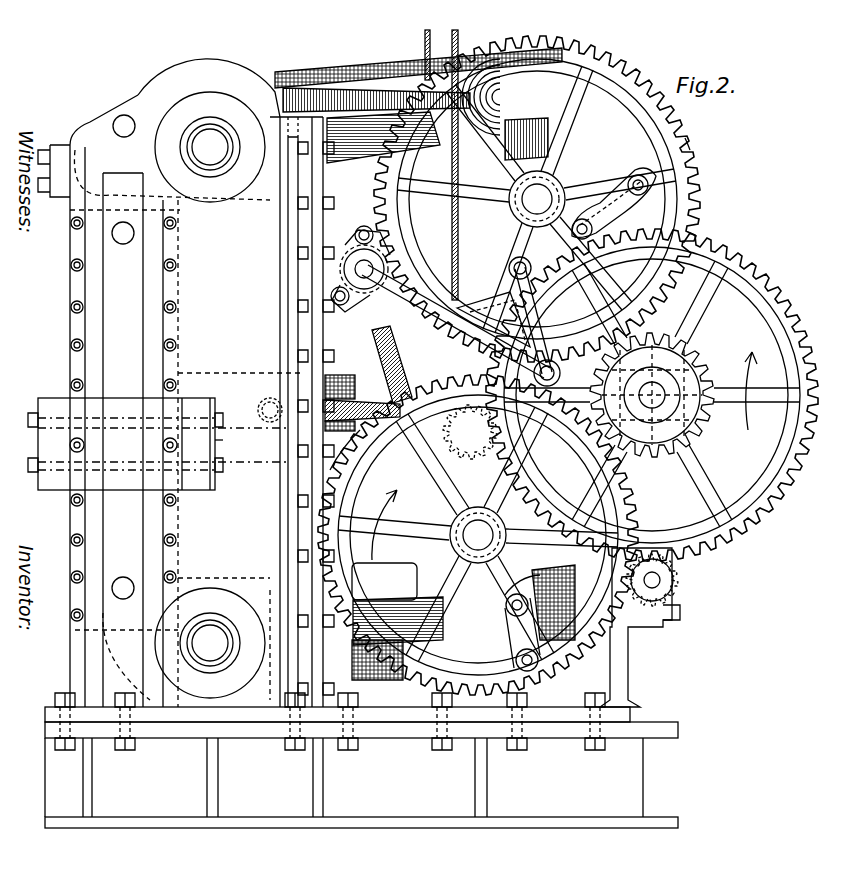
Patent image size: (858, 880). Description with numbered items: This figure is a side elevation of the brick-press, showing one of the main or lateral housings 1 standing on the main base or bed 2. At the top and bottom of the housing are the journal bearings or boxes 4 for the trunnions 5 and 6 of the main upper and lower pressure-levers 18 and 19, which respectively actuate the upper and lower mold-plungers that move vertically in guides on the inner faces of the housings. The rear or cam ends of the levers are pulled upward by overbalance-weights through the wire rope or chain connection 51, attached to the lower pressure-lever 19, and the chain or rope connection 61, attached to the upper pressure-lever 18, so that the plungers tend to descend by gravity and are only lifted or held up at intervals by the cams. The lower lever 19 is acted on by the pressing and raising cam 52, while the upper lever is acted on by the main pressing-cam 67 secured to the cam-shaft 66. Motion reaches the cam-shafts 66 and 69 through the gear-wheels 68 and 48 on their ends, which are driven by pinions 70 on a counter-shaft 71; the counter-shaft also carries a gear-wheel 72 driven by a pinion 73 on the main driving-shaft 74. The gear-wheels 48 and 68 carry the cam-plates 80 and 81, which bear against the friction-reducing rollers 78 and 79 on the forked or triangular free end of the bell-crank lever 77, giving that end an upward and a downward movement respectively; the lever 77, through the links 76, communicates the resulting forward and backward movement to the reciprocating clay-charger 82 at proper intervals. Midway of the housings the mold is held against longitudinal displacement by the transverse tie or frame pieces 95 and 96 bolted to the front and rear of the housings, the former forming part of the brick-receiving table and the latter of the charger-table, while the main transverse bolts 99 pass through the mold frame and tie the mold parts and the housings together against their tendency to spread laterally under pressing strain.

The main housings 1 is at (186, 383).
The main base 2 is at (361, 760).
The journal bearings 4 is at (210, 395).
The trunnion 5 is at (210, 147).
The trunnion 6 is at (210, 643).
The main upper pressure-lever 18 is at (418, 105).
The main lower pressure-lever 19 is at (397, 621).
The gear-wheel 48 is at (352, 444).
The wire rope or chain connection 51 is at (470, 244).
The pressing and raising cam 52 is at (540, 602).
The chain or rope connection 61 is at (425, 50).
The cam-shaft 66 is at (537, 199).
The main cam 67 is at (535, 128).
The gear-wheel 68 is at (690, 140).
The cam-shaft 69 is at (478, 535).
The pinion 70 is at (695, 428).
The counter-shaft 71 is at (652, 395).
The gear-wheel 72 is at (652, 395).
The pinion 73 is at (676, 608).
The main driving-shaft 74 is at (660, 580).
The links 76 is at (362, 404).
The bell-crank lever 77 is at (380, 356).
The friction-reducing roller 78 is at (509, 268).
The friction-reducing roller 79 is at (560, 374).
The cam-plate 80 is at (614, 203).
The cam-plate 81 is at (512, 632).
The reciprocating clay-charger 82 is at (340, 377).
The transverse tie or frame piece 95 is at (40, 444).
The transverse tie or frame piece 96 is at (205, 443).
The main transverse bolts 99 is at (123, 445).